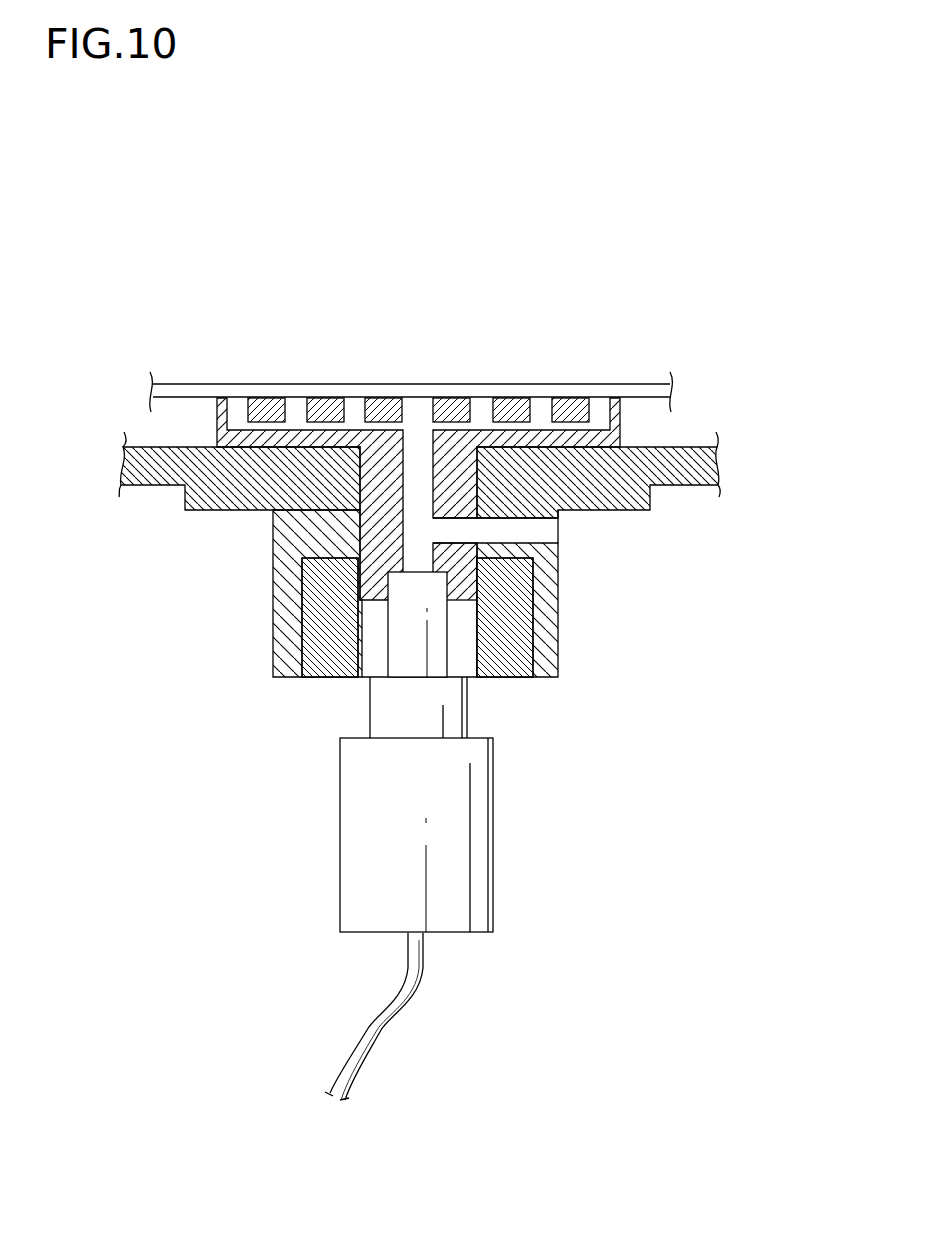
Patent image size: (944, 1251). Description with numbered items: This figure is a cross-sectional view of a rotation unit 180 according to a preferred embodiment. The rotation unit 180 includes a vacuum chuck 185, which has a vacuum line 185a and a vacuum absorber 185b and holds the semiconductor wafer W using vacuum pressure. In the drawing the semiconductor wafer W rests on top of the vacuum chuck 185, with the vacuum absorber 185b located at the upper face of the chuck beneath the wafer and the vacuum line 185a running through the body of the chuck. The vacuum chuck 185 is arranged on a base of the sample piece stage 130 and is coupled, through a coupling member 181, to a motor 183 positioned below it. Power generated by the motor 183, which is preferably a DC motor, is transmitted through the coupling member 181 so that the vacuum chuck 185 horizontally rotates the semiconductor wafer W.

The semiconductor wafer W is at (255, 396).
The sample piece stage 130 is at (143, 487).
The rotation unit 180 is at (511, 714).
The coupling member 181 is at (475, 624).
The motor 183 is at (482, 903).
The vacuum chuck 185 is at (496, 464).
The vacuum line 185a is at (537, 543).
The vacuum absorber 185b is at (483, 399).